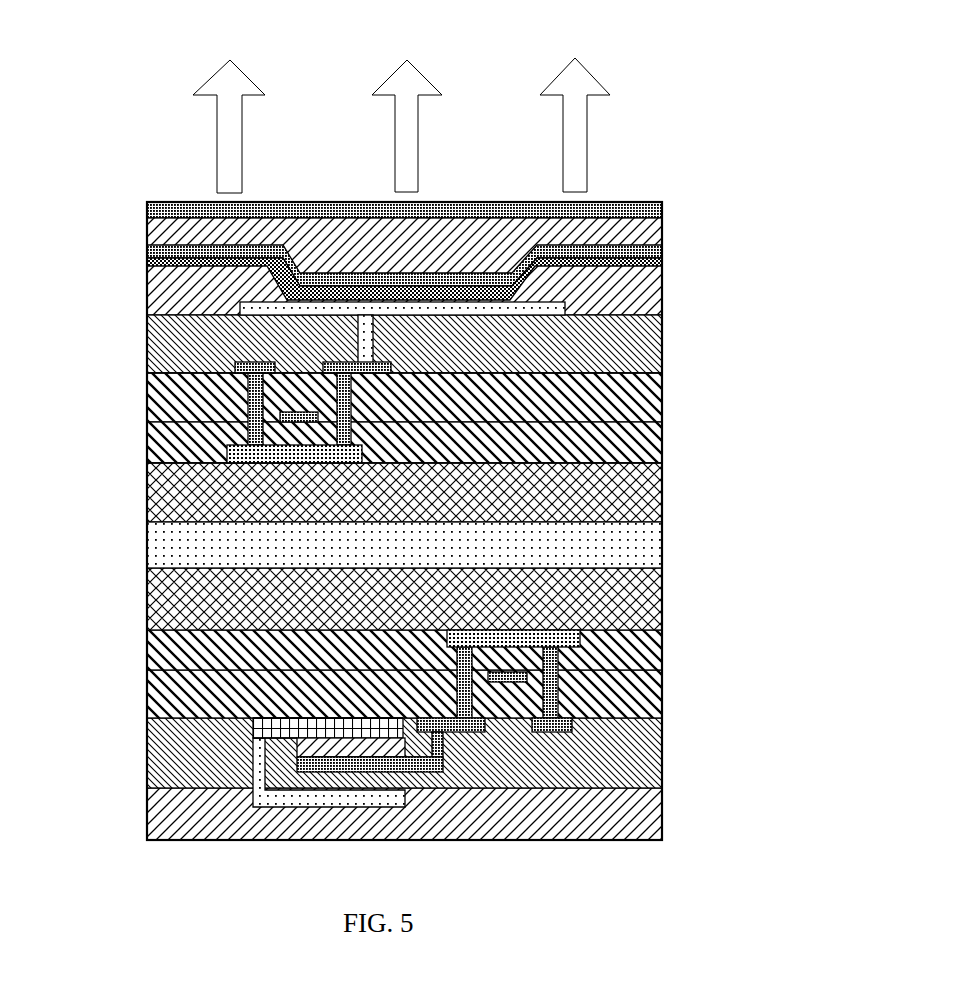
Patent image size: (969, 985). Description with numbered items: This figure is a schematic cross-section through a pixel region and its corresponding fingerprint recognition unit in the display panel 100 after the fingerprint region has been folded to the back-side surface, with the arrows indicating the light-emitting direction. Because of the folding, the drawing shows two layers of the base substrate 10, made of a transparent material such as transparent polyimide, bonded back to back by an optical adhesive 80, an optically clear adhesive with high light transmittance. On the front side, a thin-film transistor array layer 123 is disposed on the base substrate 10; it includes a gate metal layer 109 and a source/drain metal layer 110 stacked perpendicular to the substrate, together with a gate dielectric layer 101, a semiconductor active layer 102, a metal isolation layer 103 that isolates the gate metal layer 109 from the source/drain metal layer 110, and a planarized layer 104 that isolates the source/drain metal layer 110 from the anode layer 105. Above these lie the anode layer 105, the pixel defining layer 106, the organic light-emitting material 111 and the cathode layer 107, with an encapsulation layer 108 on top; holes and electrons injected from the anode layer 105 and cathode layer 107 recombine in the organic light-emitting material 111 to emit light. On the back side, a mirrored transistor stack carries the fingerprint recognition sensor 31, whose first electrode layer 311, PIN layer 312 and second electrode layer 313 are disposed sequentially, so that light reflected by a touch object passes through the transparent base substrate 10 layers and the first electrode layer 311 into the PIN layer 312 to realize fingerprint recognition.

The display panel 100 is at (648, 38).
The encapsulation layer 108 is at (145, 207).
The organic light-emitting material 111 is at (280, 296).
The cathode layer 107 is at (662, 258).
The pixel defining layer 106 is at (662, 277).
The anode layer 105 is at (565, 306).
The planarized layer 104 is at (662, 347).
The metal isolation layer 103 is at (662, 403).
The gate dielectric layer 101 is at (662, 443).
The base substrate 10 is at (662, 490).
The optical adhesive 80 is at (650, 557).
The source/drain metal layer 110 is at (235, 365).
The gate metal layer 109 is at (230, 452).
The semiconductor active layer 102 is at (148, 500).
The thin-film transistor array layer 123 is at (145, 363).
The fingerprint recognition sensor 31 is at (306, 741).
The first electrode layer 311 is at (247, 717).
The PIN layer 312 is at (250, 738).
The second electrode layer 313 is at (403, 762).